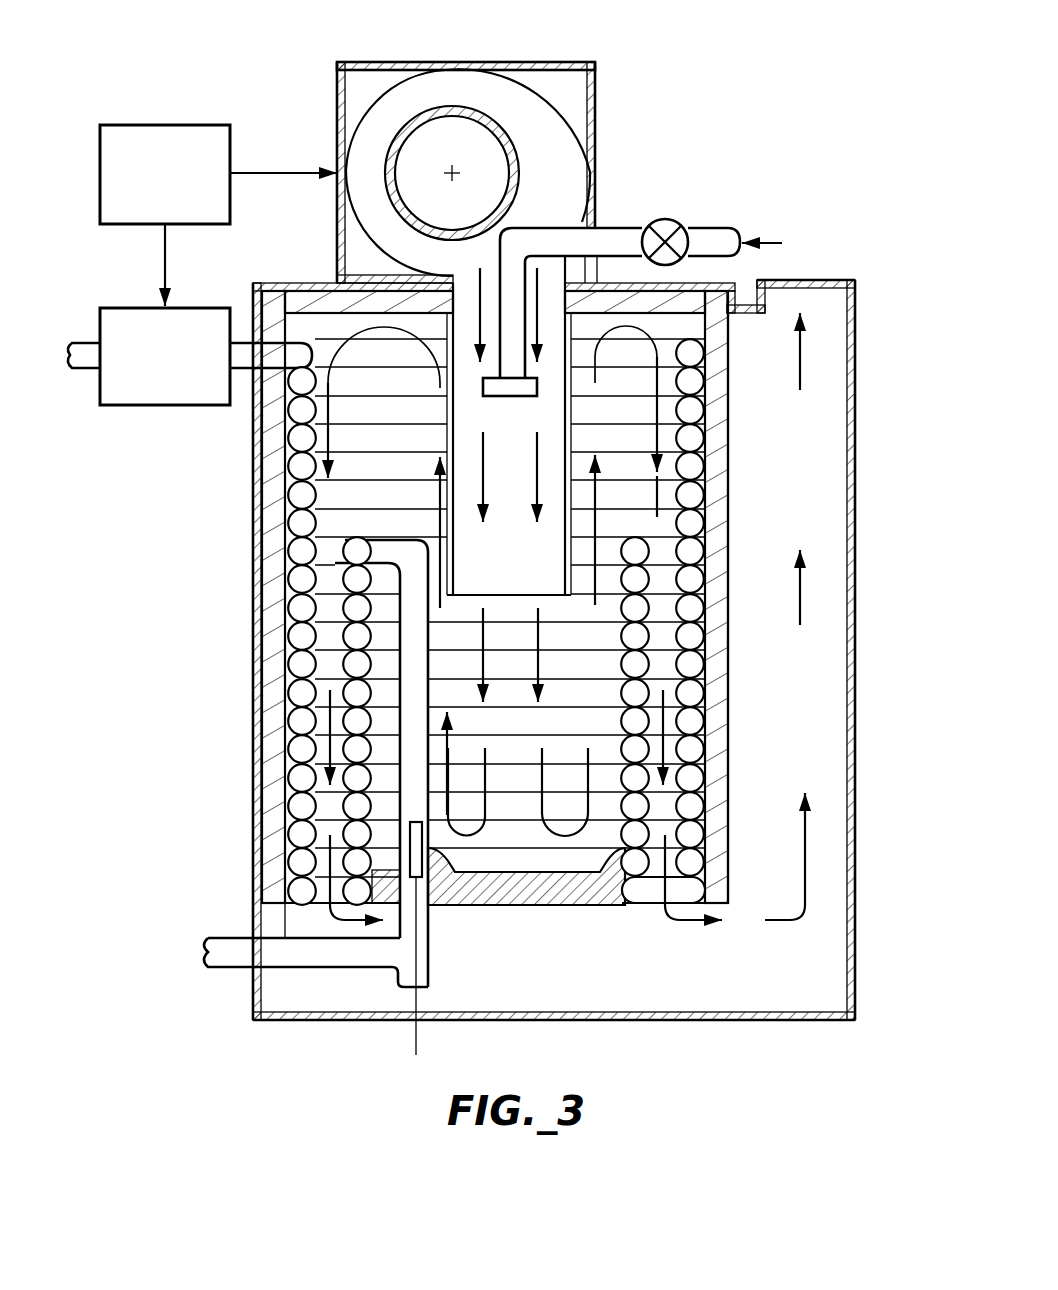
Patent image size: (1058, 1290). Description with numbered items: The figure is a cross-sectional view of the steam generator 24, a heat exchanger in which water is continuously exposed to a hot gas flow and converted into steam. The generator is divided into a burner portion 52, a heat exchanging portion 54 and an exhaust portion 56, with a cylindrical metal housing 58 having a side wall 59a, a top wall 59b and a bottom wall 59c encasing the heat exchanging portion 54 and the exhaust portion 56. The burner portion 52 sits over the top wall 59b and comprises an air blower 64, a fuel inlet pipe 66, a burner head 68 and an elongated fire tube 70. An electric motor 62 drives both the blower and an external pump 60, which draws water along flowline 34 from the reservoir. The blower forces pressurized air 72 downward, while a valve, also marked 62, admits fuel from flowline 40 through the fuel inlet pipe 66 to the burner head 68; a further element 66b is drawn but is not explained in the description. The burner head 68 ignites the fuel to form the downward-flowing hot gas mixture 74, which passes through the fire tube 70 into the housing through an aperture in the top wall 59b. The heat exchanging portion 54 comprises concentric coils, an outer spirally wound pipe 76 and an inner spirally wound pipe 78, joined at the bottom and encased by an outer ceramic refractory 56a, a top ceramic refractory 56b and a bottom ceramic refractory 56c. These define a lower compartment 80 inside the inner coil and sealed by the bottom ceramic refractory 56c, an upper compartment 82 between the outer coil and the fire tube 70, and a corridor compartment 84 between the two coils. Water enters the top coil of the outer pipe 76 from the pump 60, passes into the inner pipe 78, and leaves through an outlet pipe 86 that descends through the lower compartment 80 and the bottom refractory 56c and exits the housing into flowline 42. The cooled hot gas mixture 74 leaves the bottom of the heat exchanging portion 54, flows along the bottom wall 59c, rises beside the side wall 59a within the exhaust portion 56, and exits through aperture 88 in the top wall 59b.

The steam generator 24 is at (781, 97).
The flowline 34 is at (75, 372).
The flowline 40 is at (712, 232).
The flowline 42 is at (245, 960).
The burner portion 52 is at (612, 147).
The heat exchanging portion 54 is at (188, 825).
The exhaust portion 56 is at (820, 866).
The outer ceramic refractory 56a is at (265, 635).
The top ceramic refractory 56b is at (330, 292).
The bottom ceramic refractory 56c is at (505, 893).
The cylindrical metal housing 58 is at (850, 745).
The side wall 59a is at (850, 800).
The top wall 59b is at (262, 285).
The bottom wall 59c is at (795, 1015).
The external pump 60 is at (130, 308).
The electric motor 62 is at (130, 125).
The air blower 64 is at (540, 100).
The fuel inlet pipe 66 is at (600, 232).
The fuel line branch 66b is at (732, 468).
The burner head 68 is at (515, 398).
The elongated fire tube 70 is at (580, 525).
The pressurized air 72 is at (548, 290).
The hot gas mixture 74 is at (800, 380).
The outer spirally wound pipe 76 is at (355, 520).
The inner spirally wound pipe 78 is at (525, 805).
The lower compartment 80 is at (524, 704).
The upper compartment 82 is at (397, 396).
The corridor compartment 84 is at (345, 674).
The outlet pipe 86 is at (327, 955).
The aperture 88 is at (835, 290).